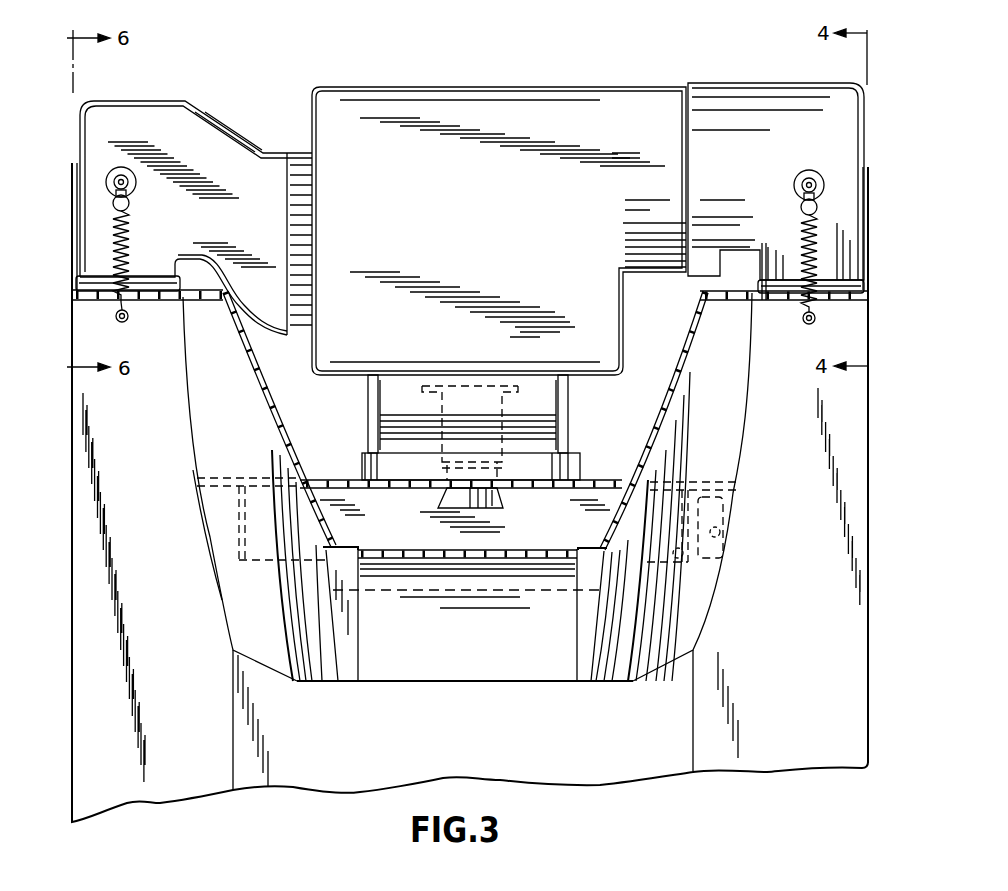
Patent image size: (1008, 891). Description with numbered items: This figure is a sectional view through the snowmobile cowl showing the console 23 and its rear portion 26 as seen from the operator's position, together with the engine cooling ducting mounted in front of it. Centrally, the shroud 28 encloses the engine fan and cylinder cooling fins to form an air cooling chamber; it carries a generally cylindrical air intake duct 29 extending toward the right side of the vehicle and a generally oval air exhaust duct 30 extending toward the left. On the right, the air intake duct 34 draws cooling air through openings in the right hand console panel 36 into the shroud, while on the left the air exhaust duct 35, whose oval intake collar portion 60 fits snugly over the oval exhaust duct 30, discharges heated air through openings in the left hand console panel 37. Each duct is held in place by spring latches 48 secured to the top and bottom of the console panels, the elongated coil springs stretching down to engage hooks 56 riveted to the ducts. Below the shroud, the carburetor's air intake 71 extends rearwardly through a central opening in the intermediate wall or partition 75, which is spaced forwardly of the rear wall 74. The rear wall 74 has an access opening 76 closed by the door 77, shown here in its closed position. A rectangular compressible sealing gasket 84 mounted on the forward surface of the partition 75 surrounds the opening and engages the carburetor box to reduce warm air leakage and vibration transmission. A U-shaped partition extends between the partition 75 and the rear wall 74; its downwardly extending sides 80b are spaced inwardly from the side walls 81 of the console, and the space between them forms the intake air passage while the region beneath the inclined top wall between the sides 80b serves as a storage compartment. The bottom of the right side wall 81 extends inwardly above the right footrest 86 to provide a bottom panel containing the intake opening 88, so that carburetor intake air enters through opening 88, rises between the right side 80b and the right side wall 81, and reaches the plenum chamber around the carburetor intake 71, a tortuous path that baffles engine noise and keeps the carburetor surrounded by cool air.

The console 23 is at (725, 450).
The rear portion of the console 26 is at (618, 687).
The shroud 28 is at (428, 113).
The air intake duct of the shroud 29 is at (652, 280).
The air exhaust duct of the shroud 30 is at (302, 158).
The air intake duct 34 is at (840, 133).
The air exhaust duct 35 is at (163, 110).
The right hand console panel 36 is at (782, 303).
The left hand console panel 37 is at (132, 298).
The spring latch 48 is at (113, 240).
The hook 56 is at (118, 196).
The oval intake collar portion 60 is at (713, 90).
The air intake of the carburetor 71 is at (473, 512).
The rear wall 74 is at (350, 548).
The intermediate wall or partition 75 is at (611, 480).
The access opening 76 is at (367, 546).
The door 77 is at (431, 560).
The downwardly extending sides of the U-shaped partition 80b is at (237, 525).
The side walls of the console 81 is at (242, 633).
The sealing gasket 84 is at (373, 467).
The footrest 86 is at (155, 765).
The intake opening 88 is at (723, 530).